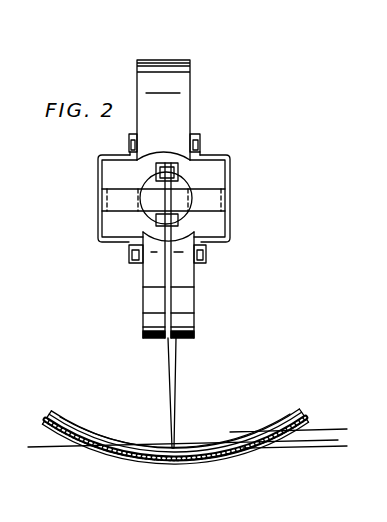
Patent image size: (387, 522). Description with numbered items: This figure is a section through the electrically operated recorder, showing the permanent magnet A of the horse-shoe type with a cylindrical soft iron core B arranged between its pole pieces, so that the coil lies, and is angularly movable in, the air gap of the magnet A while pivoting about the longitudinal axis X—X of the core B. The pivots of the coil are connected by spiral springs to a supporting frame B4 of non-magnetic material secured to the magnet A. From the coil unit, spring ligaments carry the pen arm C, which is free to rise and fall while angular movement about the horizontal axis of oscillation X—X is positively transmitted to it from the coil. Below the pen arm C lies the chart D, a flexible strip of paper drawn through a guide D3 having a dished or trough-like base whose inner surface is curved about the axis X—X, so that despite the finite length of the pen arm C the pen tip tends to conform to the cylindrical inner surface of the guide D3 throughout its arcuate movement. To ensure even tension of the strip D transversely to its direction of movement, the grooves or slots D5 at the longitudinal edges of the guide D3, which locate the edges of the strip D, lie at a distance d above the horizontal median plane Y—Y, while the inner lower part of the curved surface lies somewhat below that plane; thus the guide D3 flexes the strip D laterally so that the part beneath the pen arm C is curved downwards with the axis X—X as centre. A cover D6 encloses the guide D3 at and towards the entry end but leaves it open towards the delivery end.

The permanent magnet A is at (172, 110).
The soft iron core B is at (187, 180).
The supporting frame B4 is at (217, 154).
The longitudinal axis of the core X is at (173, 196).
The pen arm C is at (177, 392).
The chart D is at (91, 440).
The grooves or slots of the guide D5 is at (277, 432).
The cover D6 is at (112, 430).
The guide D3 is at (199, 466).
The distance d is at (320, 430).
The horizontal median plane Y is at (346, 440).